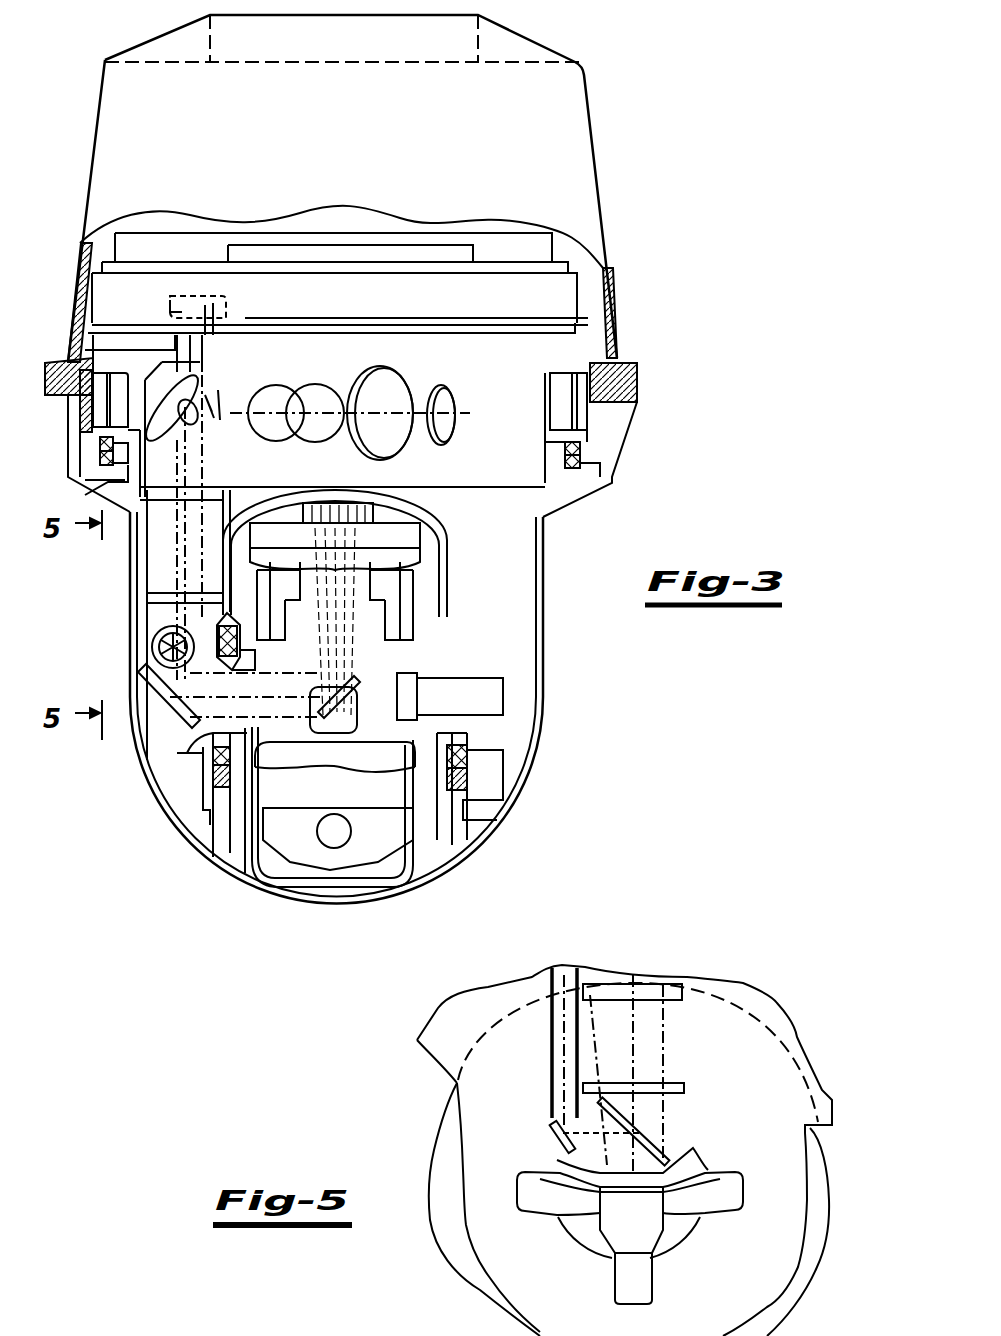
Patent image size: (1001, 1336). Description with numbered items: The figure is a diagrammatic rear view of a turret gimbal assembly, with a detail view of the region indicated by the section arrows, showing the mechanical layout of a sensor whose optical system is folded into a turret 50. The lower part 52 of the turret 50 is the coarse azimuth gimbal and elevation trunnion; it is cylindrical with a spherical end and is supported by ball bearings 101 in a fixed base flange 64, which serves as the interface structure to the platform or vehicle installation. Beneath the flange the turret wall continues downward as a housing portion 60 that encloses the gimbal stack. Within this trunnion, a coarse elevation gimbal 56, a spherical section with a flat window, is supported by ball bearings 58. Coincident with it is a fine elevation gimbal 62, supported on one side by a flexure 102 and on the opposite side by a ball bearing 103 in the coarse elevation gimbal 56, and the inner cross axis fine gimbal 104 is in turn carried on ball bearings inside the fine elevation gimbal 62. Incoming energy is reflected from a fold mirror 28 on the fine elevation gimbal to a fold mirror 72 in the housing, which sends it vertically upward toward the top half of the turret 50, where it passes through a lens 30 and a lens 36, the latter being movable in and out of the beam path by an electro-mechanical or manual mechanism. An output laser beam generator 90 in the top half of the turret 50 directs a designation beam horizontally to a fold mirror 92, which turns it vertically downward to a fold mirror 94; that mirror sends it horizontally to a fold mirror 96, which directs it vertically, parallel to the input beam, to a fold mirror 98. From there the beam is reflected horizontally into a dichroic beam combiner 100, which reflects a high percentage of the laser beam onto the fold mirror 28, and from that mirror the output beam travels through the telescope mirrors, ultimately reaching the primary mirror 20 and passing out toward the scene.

In FIG. 3, the turret 50 is at (70, 294).
In FIG. 3, the output laser beam generator 90 is at (170, 297).
In FIG. 3, the fold mirror 92 is at (212, 300).
In FIG. 3, the fixed base flange 64 is at (648, 385).
In FIG. 3, the ball bearings 101 is at (585, 455).
In FIG. 3, the housing base 60 is at (453, 550).
In FIG. 3, the fine elevation gimbal 62 is at (412, 550).
In FIG. 3, the flexure 102 is at (423, 692).
In FIG. 3, the ball bearings 58 is at (217, 623).
In FIG. 3, the inner cross axis fine gimbal 104 is at (380, 807).
In FIG. 3, the primary mirror 20 is at (345, 870).
In FIG. 3, the coarse elevation gimbal 56 is at (256, 900).
In FIG. 3, the ball bearing 103 is at (185, 757).
In FIG. 3, the fold mirror 72 is at (150, 675).
In FIG. 3, the dichroic beam combiner 100 is at (150, 682).
In FIG. 5, the dichroic beam combiner 100 is at (680, 1087).
In FIG. 3, the lower part of the turret 52 is at (150, 650).
In FIG. 3, the lens 36 is at (136, 600).
In FIG. 3, the lens 30 is at (150, 440).
In FIG. 3, the fold mirror 96 is at (160, 445).
In FIG. 3, the fold mirror 94 is at (210, 415).
In FIG. 3, the fold mirror 28 is at (340, 733).
In FIG. 5, the fold mirror 98 is at (548, 1132).